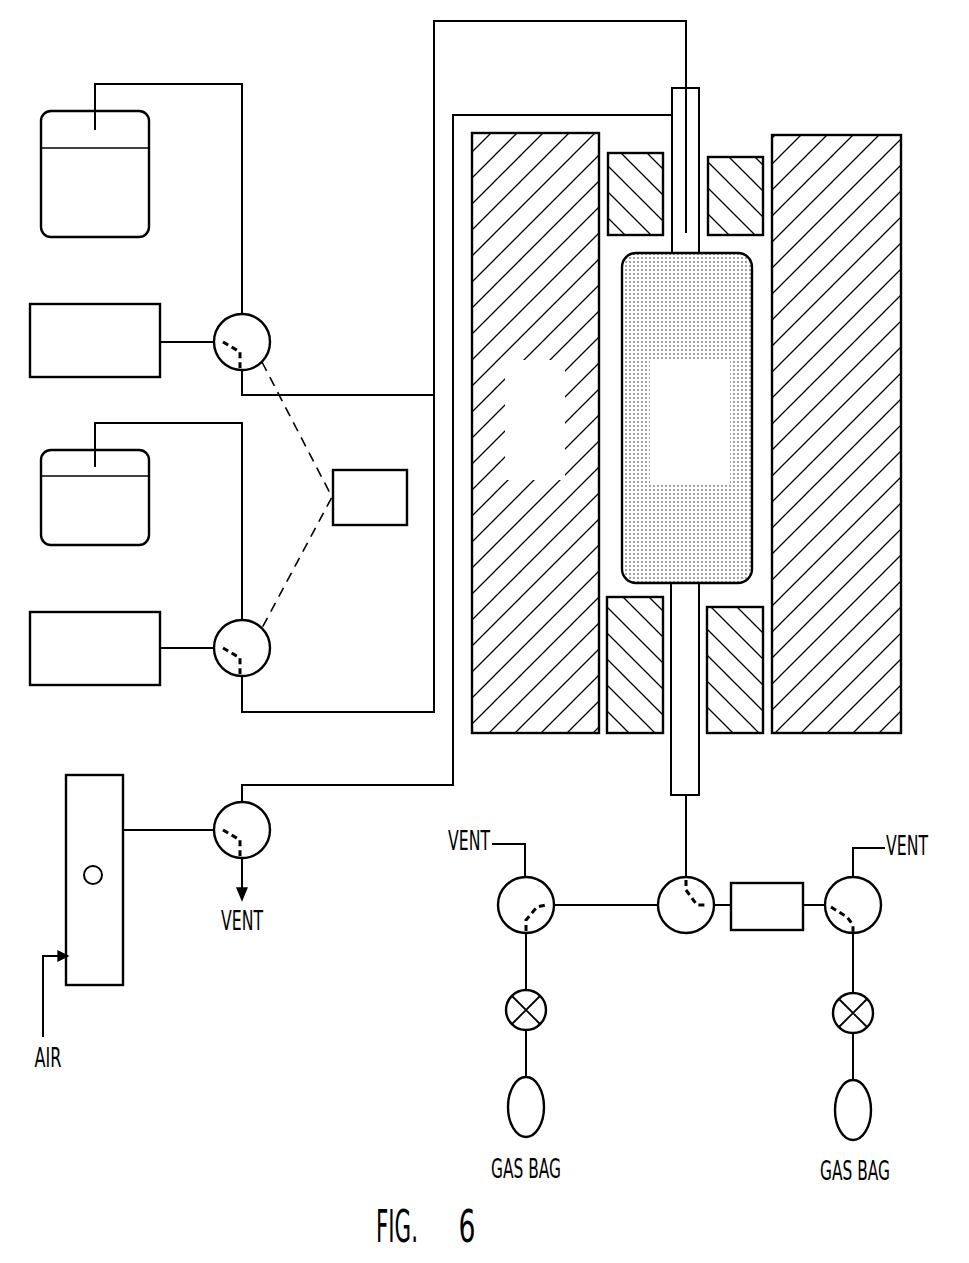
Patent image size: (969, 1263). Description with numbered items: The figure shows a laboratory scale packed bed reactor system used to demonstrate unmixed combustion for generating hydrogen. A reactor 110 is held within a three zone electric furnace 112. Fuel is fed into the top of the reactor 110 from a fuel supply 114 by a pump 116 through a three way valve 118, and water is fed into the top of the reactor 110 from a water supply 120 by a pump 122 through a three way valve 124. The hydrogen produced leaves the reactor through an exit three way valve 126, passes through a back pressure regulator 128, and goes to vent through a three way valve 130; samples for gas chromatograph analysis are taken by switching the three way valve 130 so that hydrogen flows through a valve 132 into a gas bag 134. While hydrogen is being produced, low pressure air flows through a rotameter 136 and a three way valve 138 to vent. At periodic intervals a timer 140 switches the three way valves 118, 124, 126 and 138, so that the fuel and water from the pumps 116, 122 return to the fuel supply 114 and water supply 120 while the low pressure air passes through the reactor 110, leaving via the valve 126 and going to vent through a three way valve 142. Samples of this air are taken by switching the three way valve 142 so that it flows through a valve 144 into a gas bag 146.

The reactor 110 is at (700, 128).
The three zone electric furnace 112 is at (830, 148).
The fuel supply 114 is at (150, 171).
The pump 116 is at (148, 312).
The three way valve 118 is at (257, 335).
The water supply 120 is at (146, 491).
The pump 122 is at (150, 675).
The three way valve 124 is at (258, 656).
The exit three way valve 126 is at (670, 920).
The back pressure regulator 128 is at (780, 887).
The three way valve 130 is at (866, 920).
The valve 132 is at (833, 1008).
The gas bag 134 is at (845, 1113).
The rotameter 136 is at (100, 932).
The three way valve 138 is at (258, 828).
The timer 140 is at (365, 512).
The three way valve 142 is at (500, 888).
The valve 144 is at (507, 1008).
The gas bag 146 is at (512, 1108).